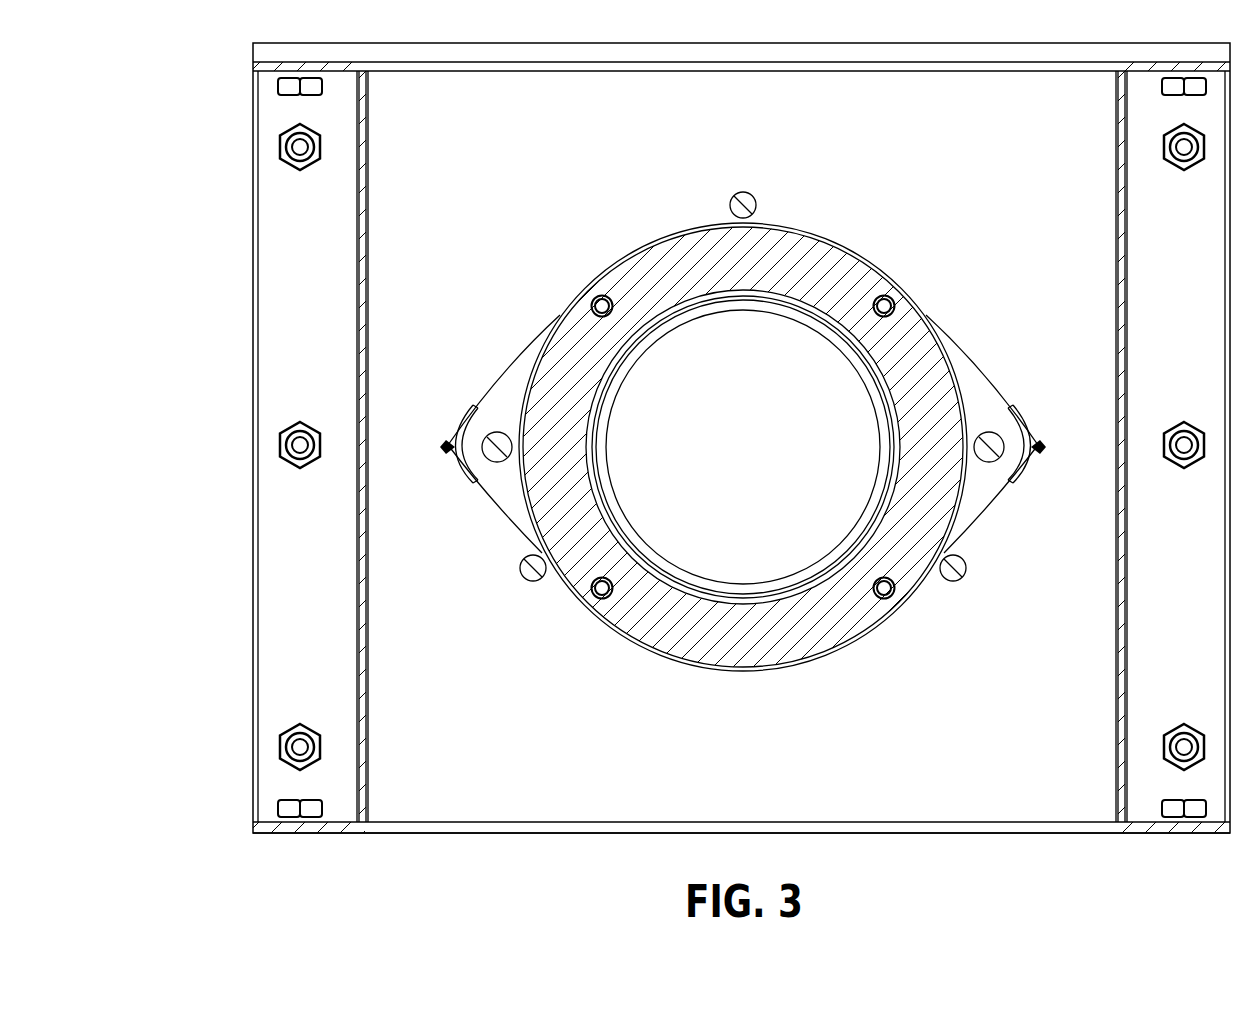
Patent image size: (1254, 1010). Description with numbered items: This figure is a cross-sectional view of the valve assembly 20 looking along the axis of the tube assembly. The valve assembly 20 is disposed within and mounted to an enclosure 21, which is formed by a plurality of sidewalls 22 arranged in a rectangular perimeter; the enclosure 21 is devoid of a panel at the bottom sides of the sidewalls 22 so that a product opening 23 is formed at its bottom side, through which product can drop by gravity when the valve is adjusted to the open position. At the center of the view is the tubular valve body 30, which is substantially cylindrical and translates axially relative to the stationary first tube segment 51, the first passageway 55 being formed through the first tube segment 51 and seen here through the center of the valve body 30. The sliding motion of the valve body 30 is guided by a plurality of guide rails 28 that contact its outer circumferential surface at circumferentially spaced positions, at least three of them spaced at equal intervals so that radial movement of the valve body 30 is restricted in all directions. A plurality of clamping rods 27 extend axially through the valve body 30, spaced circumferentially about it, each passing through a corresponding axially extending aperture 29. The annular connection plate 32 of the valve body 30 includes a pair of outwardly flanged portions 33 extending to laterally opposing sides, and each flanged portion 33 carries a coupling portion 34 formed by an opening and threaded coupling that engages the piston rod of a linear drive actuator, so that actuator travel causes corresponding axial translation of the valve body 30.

The valve assembly 20 is at (233, 60).
The enclosure 21 is at (249, 228).
The sidewalls 22 is at (357, 392).
The product opening 23 is at (596, 828).
The clamping rods 27 is at (594, 298).
The guide rails 28 is at (742, 192).
The apertures 29 is at (602, 303).
The valve body 30 is at (830, 275).
The connection plate 32 is at (1032, 352).
The flanged portions 33 is at (737, 404).
The coupling portion 34 is at (490, 453).
The first tube segment 51 is at (662, 330).
The first passageway 55 is at (622, 372).